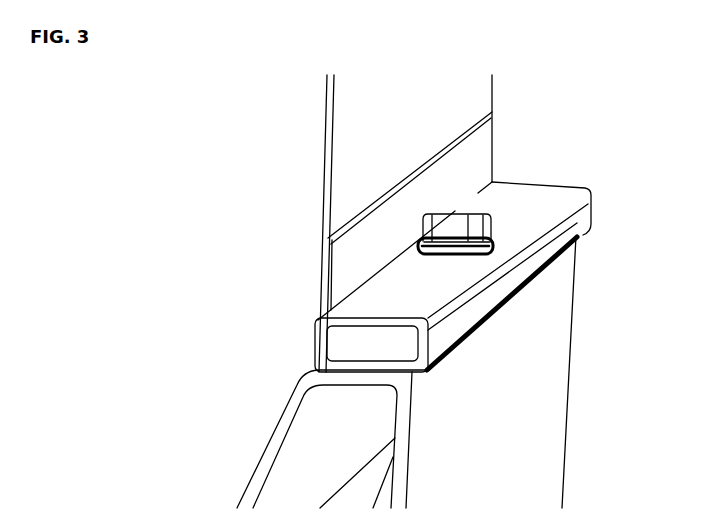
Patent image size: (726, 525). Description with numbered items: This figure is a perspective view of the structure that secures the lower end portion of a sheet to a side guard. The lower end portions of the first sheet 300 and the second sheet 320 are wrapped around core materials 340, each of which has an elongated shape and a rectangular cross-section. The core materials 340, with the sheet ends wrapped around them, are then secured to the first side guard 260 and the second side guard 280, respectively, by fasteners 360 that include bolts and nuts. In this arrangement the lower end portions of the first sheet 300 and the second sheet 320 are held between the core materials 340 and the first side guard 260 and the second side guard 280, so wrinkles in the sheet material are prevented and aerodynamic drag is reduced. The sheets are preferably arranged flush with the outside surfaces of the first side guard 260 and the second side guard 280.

The first side guard 260 is at (265, 447).
The second side guard 280 is at (277, 446).
The first sheet 300 is at (323, 205).
The second sheet 320 is at (325, 211).
The core material 340 is at (338, 344).
The fastener 360 is at (489, 222).